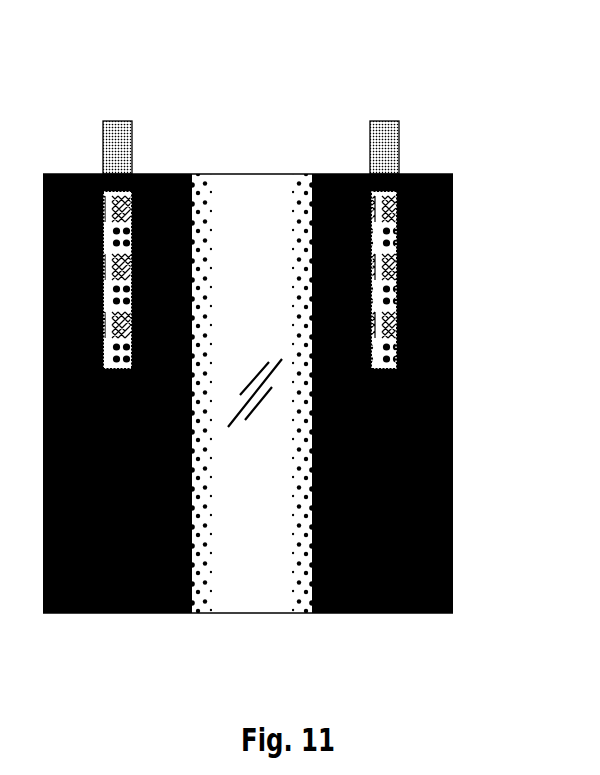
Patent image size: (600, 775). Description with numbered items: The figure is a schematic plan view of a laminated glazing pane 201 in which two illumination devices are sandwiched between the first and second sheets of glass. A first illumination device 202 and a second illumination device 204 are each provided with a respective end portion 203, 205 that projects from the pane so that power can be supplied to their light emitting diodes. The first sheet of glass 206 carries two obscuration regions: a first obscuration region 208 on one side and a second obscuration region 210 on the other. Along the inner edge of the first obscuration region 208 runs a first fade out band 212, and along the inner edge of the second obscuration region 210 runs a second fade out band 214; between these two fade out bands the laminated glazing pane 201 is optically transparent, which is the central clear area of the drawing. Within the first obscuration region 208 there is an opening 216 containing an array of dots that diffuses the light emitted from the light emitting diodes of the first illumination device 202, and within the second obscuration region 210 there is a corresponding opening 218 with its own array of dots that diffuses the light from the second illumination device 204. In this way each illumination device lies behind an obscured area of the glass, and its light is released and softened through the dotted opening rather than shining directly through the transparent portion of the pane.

The laminated glazing pane 201 is at (227, 93).
The first illumination device 202 is at (90, 126).
The end portion of first illumination device 203 is at (124, 152).
The second illumination device 204 is at (418, 129).
The end portion of second illumination device 205 is at (384, 135).
The first sheet of glass 206 is at (239, 597).
The first obscuration region 208 is at (66, 613).
The second obscuration region 210 is at (453, 218).
The first fade out band 212 is at (226, 193).
The second fade out band 214 is at (282, 586).
The opening in first obscuration region 216 is at (129, 302).
The opening in second obscuration region 218 is at (397, 301).